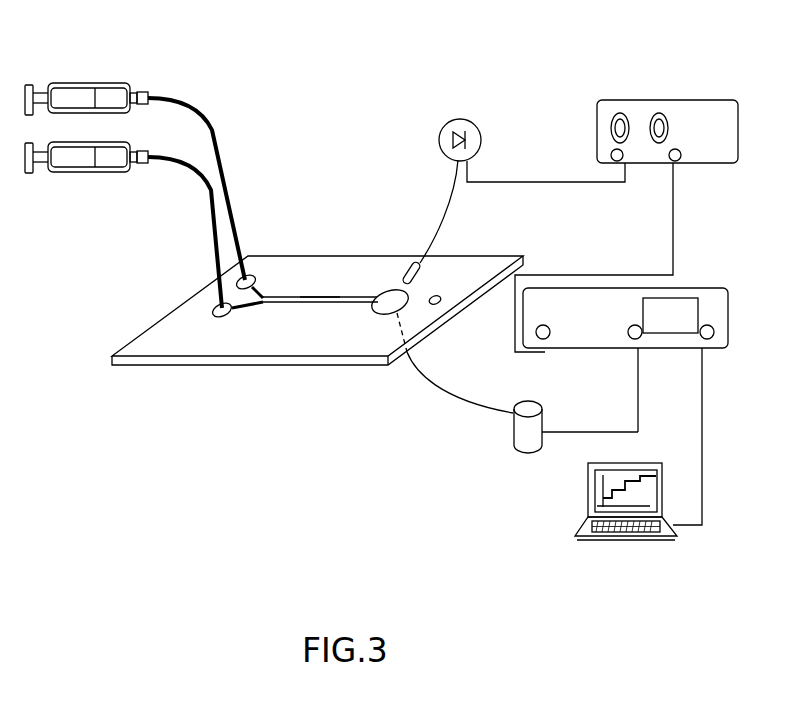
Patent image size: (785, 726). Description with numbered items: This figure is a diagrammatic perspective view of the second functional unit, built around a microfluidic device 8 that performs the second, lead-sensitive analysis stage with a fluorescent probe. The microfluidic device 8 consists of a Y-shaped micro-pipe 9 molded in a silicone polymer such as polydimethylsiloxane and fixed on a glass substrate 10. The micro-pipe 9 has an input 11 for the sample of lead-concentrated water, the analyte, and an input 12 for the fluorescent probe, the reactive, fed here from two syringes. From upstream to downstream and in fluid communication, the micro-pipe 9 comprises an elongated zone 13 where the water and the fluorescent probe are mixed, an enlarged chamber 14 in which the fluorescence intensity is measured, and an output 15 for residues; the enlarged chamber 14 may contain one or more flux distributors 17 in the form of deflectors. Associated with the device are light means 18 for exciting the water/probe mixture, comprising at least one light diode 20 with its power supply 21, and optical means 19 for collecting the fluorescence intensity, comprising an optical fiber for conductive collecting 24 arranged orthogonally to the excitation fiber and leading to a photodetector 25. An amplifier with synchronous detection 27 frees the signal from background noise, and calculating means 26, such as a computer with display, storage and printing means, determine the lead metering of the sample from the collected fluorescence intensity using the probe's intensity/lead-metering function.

The microfluidic device 8 is at (317, 291).
The micro-pipe 9 is at (290, 297).
The glass substrate 10 is at (268, 342).
The input for the sample 11 is at (215, 314).
The input for the fluorescent probe 12 is at (248, 278).
The elongated zone 13 is at (318, 303).
The enlarged chamber 14 is at (388, 291).
The output of residues 15 is at (440, 303).
The flux distributors 17 is at (718, 298).
The light means for excitation 18 is at (474, 113).
The optical means for collecting the fluorescence intensity 19 is at (433, 398).
The light diode 20 is at (450, 122).
The power supply 21 is at (695, 118).
The optical fiber for conductive collecting 24 is at (473, 407).
The photodetector 25 is at (532, 453).
The calculating means 26 is at (626, 474).
The amplifier with synchronous detection 27 is at (633, 377).